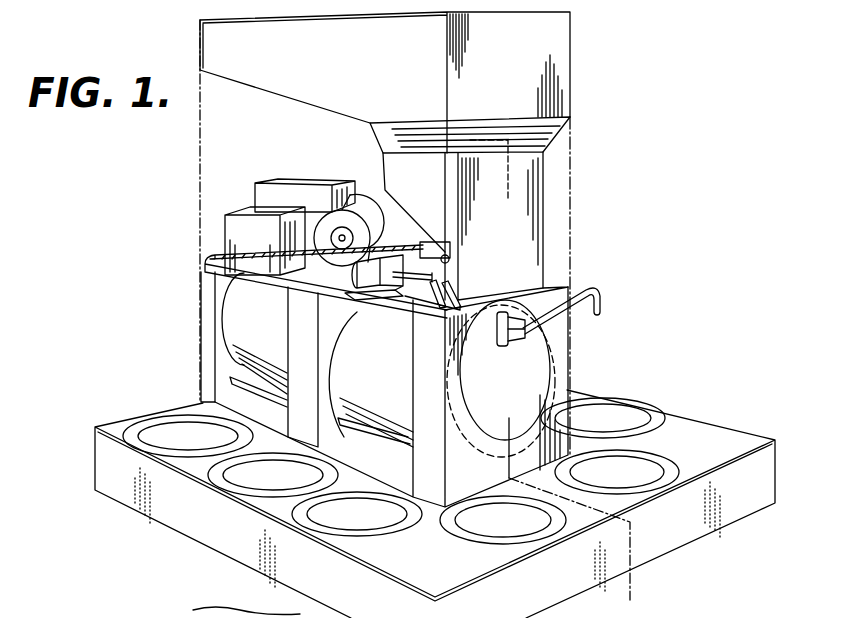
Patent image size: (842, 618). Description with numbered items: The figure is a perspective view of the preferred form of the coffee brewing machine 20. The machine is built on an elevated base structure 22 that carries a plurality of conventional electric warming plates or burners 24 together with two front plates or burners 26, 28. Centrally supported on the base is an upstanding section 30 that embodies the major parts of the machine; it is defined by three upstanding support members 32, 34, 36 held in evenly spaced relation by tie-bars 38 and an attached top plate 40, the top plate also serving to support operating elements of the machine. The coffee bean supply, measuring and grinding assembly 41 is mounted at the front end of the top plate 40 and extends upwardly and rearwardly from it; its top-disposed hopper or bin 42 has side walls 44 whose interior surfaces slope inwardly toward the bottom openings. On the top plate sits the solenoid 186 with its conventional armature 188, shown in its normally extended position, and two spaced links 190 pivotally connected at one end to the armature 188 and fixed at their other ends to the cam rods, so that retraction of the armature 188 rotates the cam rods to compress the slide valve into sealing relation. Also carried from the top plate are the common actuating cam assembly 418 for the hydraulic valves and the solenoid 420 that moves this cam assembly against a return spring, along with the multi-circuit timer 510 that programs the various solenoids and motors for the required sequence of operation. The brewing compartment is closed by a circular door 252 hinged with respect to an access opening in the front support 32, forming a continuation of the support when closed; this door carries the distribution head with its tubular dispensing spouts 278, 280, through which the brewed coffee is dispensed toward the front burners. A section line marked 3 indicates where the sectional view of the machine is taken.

The section line 3- 3 is at (228, 128).
The coffee brewing machine 20 is at (614, 216).
The elevated base structure 22 is at (695, 418).
The electric warming plates or burners 24 is at (198, 440).
The front plate or burner 26 is at (514, 530).
The front plate or burner 28 is at (627, 481).
The upstanding section 30 is at (573, 271).
The upstanding support member 32 is at (441, 386).
The upstanding support member 34 is at (314, 347).
The upstanding support member 36 is at (207, 335).
The tie-bars 38 is at (238, 384).
The top plate 40 is at (224, 272).
The coffee bean supply, measuring and grinding assembly 41 is at (552, 183).
The hopper or bin 42 is at (574, 103).
The side walls 44 is at (545, 133).
The solenoid 186 is at (373, 277).
The armature 188 is at (413, 280).
The links 190 is at (448, 302).
The circular door 252 is at (535, 355).
The tubular dispensing spout 278 is at (602, 299).
The tubular dispensing spout 280 is at (502, 346).
The actuating cam assembly 418 is at (300, 183).
The solenoid 420 is at (362, 168).
The multi-circuit timer 510 is at (228, 232).